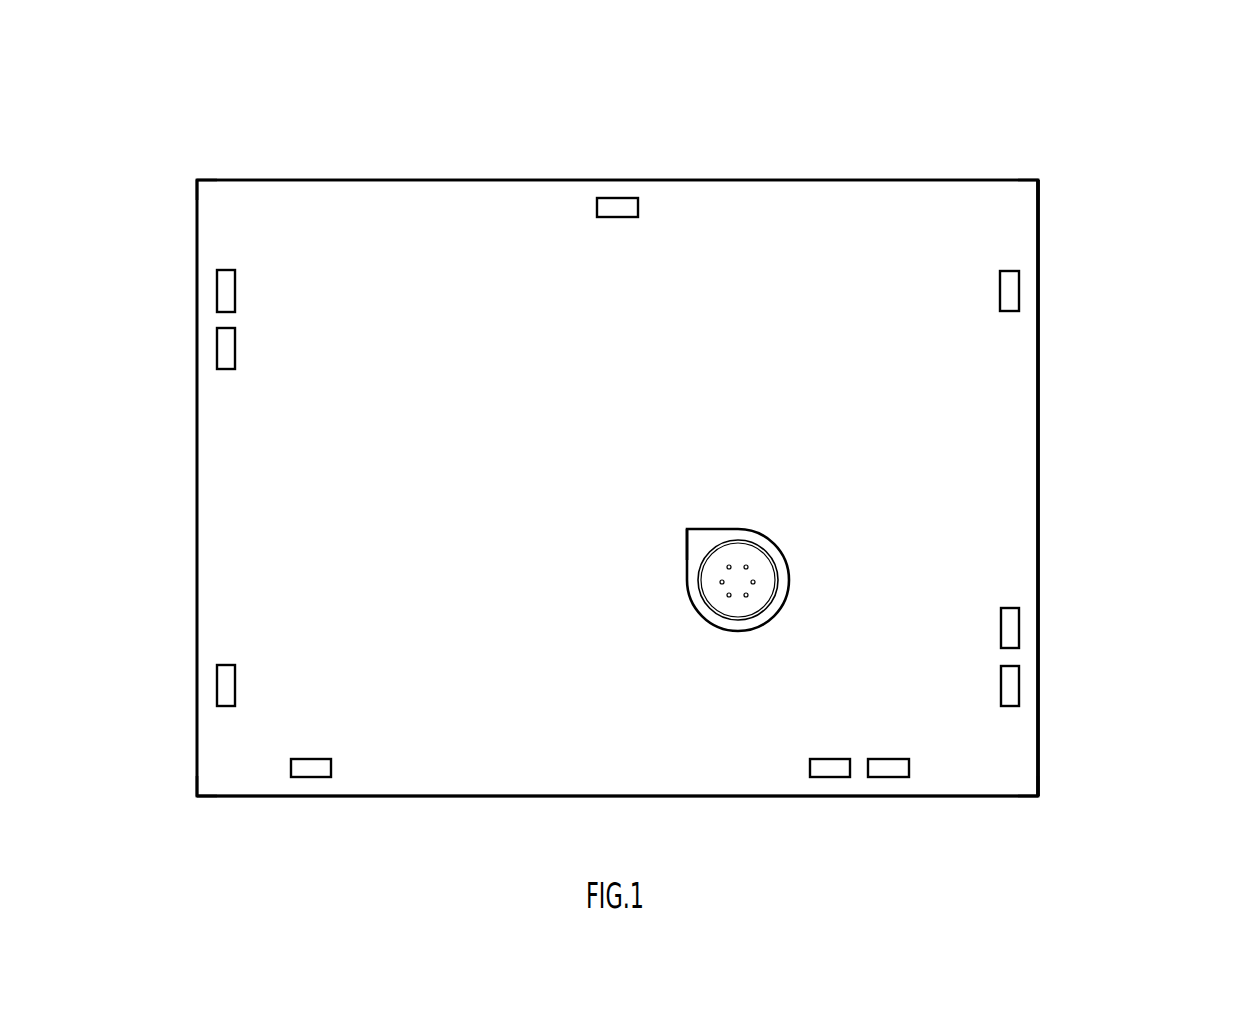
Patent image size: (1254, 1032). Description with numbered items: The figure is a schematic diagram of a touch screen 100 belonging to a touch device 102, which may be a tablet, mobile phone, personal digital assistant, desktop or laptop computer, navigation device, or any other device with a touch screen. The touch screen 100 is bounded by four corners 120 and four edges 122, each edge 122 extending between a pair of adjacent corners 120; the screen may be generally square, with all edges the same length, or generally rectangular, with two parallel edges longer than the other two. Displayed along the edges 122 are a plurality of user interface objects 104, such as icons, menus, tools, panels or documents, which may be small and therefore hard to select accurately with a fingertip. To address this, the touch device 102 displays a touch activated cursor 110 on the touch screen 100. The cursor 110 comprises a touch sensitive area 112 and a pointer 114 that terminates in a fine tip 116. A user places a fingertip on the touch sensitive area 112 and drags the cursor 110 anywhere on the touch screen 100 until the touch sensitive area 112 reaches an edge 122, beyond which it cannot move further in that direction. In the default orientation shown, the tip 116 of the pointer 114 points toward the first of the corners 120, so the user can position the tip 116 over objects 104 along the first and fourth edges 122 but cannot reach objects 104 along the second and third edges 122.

The touch screen 100 is at (1038, 375).
The touch device 102 is at (1157, 177).
The displayed objects 104 is at (620, 486).
The touch activated cursor 110 is at (797, 532).
The touch sensitive area 112 is at (737, 605).
The pointer 114 is at (684, 511).
The tip 116 is at (687, 529).
The corners 120 is at (615, 481).
The edges 122 is at (618, 483).